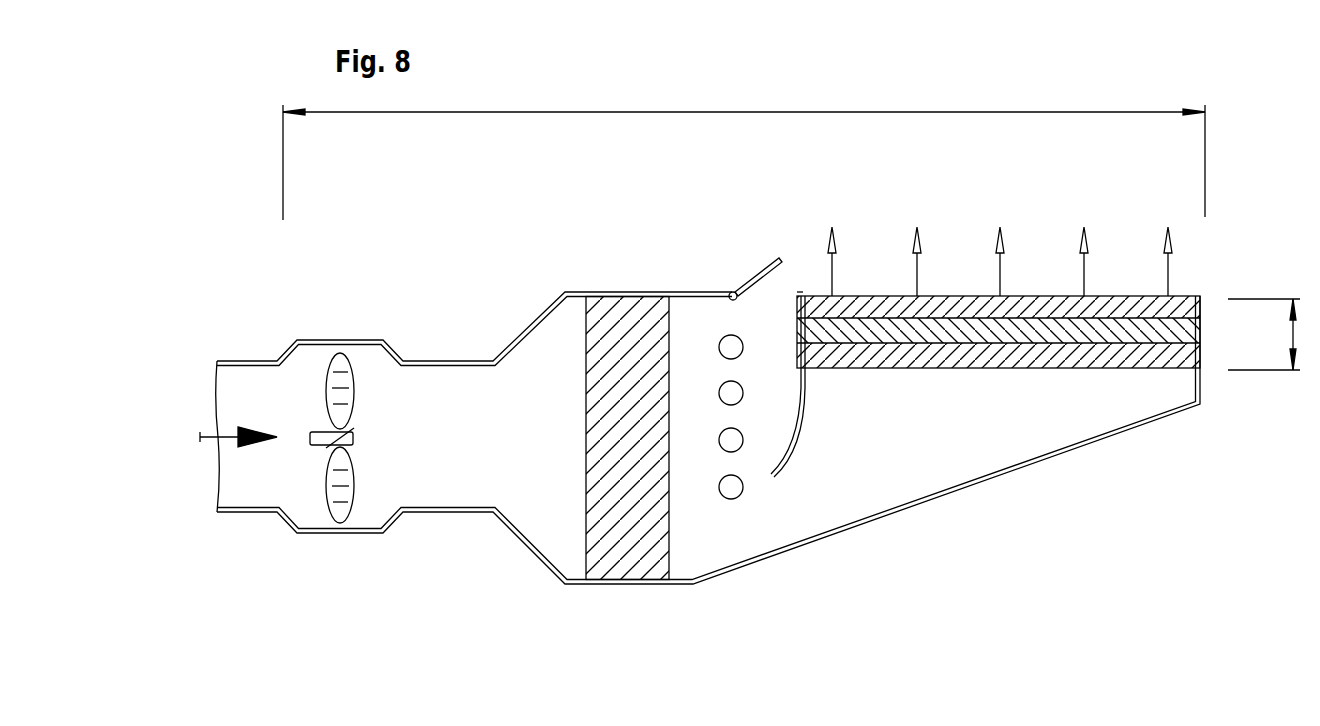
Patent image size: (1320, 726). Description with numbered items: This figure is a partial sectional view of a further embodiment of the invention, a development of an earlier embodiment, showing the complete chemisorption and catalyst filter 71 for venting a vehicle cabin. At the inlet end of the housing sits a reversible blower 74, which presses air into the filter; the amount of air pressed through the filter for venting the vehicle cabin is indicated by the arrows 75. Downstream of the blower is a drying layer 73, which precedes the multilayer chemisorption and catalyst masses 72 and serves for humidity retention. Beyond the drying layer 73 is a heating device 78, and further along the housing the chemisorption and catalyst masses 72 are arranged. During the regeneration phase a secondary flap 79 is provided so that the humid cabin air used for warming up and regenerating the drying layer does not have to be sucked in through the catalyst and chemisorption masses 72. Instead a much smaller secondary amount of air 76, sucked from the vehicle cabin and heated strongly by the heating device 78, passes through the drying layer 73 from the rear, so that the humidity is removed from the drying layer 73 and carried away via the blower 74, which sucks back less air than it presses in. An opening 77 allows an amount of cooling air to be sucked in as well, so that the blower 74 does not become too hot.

The chemisorption and catalyst filter 71 is at (706, 112).
The multilayer chemisorption and catalyst masses 72 is at (1291, 337).
The drying layer 73 is at (624, 543).
The reversible blower 74 is at (338, 516).
The arrows (amount of air pressed through the filter) 75 is at (1172, 246).
The secondary amount of air 76 is at (766, 326).
The opening 77 is at (372, 390).
The heating device 78 is at (731, 499).
The secondary flap 79 is at (761, 270).